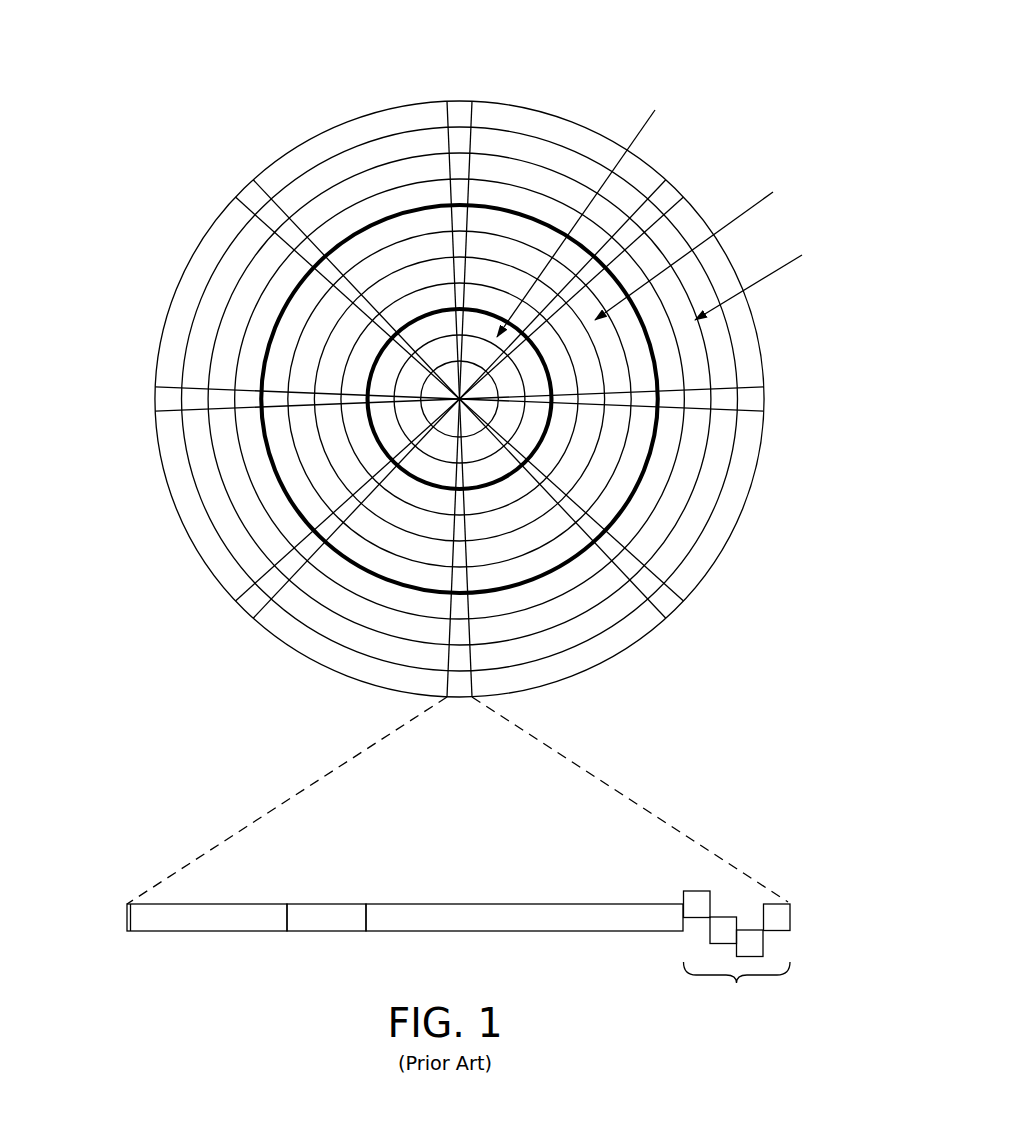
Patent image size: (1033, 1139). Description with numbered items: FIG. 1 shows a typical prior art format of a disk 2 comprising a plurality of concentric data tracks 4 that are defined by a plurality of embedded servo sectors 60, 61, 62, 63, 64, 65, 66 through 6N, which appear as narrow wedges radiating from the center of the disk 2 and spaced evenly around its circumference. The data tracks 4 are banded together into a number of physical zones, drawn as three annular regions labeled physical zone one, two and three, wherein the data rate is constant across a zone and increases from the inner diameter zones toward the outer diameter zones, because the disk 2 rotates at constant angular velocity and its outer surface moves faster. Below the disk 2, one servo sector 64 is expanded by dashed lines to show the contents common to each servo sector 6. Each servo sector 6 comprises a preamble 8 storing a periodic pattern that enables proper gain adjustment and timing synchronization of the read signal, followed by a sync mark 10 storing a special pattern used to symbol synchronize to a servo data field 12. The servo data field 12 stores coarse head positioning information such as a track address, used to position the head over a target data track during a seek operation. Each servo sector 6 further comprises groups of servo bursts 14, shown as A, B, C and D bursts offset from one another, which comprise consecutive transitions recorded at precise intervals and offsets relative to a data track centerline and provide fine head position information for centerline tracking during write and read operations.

The disk 2 is at (236, 105).
The data tracks 4 is at (562, 160).
The servo sector 6 is at (460, 406).
The servo sector 60 is at (459, 110).
The servo sector 61 is at (665, 193).
The servo sector 62 is at (757, 400).
The servo sector 63 is at (667, 603).
The servo sector 64 is at (325, 765).
The servo sector 65 is at (250, 607).
The servo sector 66 is at (160, 399).
The servo sector 6N is at (248, 190).
The preamble 8 is at (188, 933).
The sync mark 10 is at (324, 933).
The servo data field 12 is at (513, 932).
The servo bursts 14 is at (672, 875).